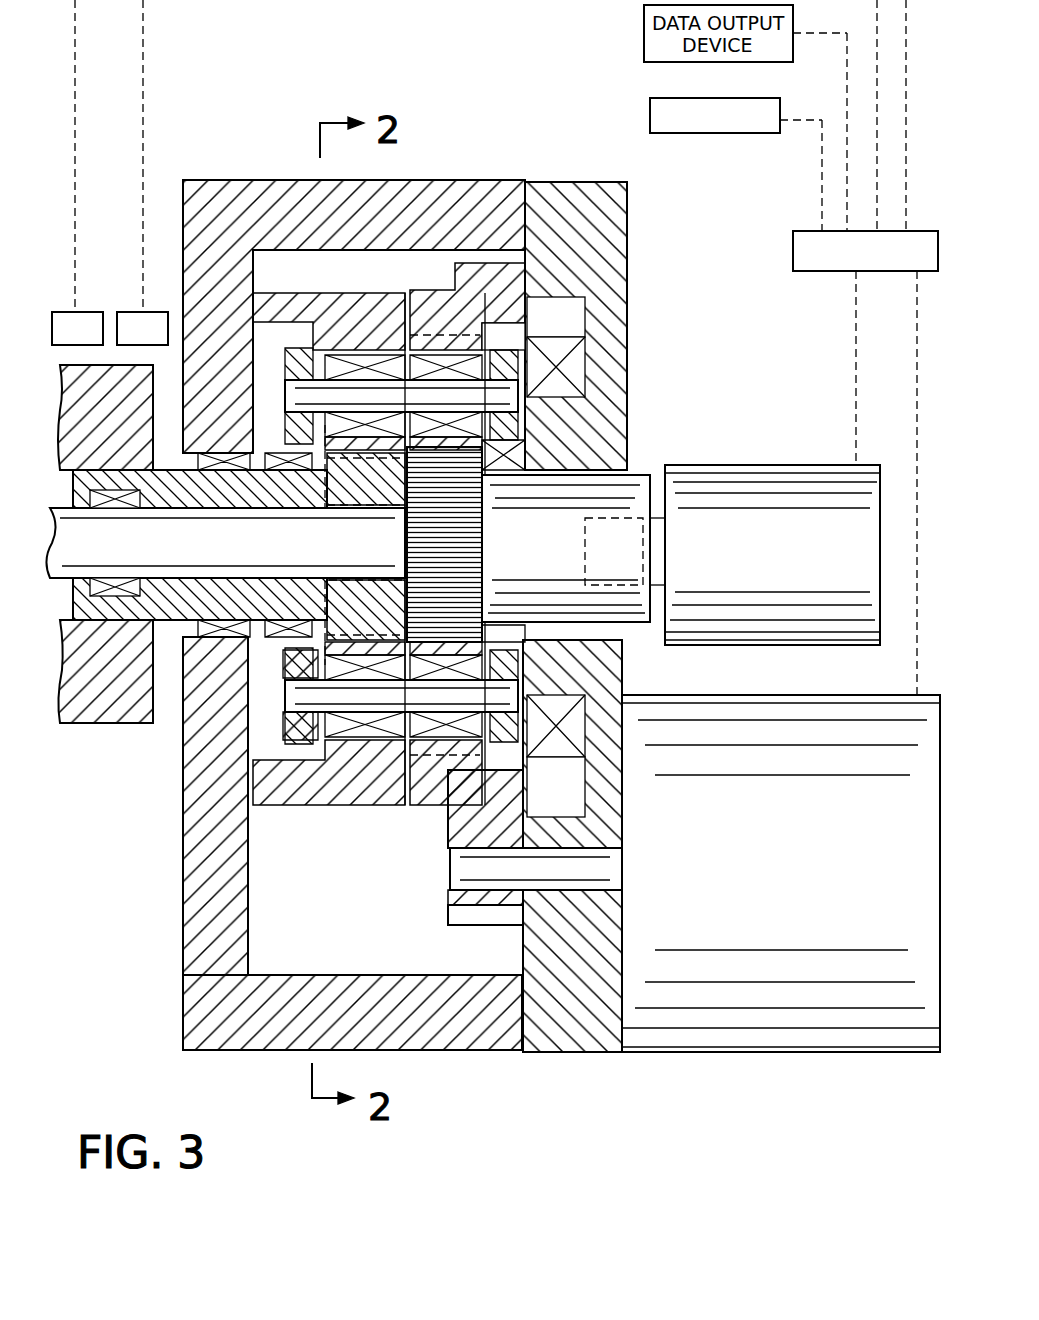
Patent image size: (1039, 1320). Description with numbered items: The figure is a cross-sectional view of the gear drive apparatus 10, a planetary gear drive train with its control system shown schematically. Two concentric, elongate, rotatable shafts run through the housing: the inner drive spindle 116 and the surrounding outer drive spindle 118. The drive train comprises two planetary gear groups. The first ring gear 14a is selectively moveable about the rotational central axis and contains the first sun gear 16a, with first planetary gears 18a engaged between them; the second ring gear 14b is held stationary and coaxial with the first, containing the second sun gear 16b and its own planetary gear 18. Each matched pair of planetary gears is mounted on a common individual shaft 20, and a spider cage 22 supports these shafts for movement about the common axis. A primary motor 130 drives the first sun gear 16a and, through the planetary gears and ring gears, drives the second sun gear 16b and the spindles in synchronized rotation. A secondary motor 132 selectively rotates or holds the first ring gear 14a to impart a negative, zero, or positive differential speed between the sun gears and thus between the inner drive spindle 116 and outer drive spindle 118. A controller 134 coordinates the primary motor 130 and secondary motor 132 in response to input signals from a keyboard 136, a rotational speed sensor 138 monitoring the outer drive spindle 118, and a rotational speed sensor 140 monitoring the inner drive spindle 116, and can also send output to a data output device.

The gear drive apparatus 10 is at (122, 1036).
The first ring gear 14a is at (345, 792).
The second ring gear 14b is at (445, 795).
The first sun gear 16a is at (482, 525).
The second sun gear 16b is at (345, 640).
The planetary gear 18 is at (320, 745).
The first planetary gear 18a is at (462, 350).
The common individual shaft 20 is at (515, 392).
The spider cage 22 is at (520, 425).
The inner drive spindle 116 is at (106, 558).
The outer drive spindle 118 is at (208, 592).
The primary motor 130 is at (770, 465).
The secondary motor 132 is at (762, 848).
The controller 134 is at (793, 240).
The keyboard 136 is at (650, 110).
The rotational speed sensor 138 is at (85, 310).
The rotational speed sensor 140 is at (152, 312).